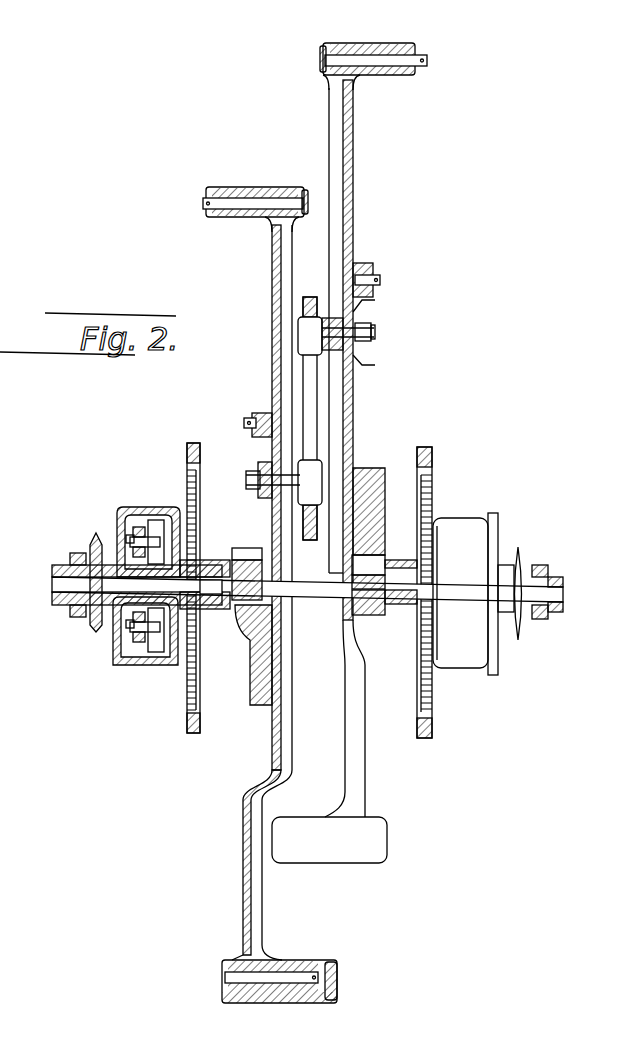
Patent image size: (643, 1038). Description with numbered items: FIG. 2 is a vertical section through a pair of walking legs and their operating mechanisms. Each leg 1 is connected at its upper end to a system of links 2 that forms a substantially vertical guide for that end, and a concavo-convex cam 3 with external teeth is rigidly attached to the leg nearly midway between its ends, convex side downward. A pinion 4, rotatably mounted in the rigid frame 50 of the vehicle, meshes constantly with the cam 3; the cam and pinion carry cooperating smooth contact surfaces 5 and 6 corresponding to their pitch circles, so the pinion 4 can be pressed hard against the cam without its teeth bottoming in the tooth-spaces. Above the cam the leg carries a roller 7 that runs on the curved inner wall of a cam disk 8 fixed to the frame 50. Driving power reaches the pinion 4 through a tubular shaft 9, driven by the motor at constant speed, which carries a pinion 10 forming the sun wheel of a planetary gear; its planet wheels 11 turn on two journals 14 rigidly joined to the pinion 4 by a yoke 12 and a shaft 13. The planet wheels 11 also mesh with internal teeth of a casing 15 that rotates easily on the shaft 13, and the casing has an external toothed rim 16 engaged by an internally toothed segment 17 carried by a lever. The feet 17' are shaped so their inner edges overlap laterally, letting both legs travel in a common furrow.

The leg 1 is at (352, 732).
The system of links 2 is at (410, 47).
The concavo-convex cam 3 is at (272, 726).
The pinion 4 is at (253, 551).
The smooth contact surface 5 is at (382, 482).
The smooth contact surface 6 is at (236, 563).
The roller 7 is at (300, 333).
The cam disk 8 is at (310, 379).
The tubular shaft 9 is at (95, 613).
The pinion 10 is at (137, 566).
The planet wheels 11 is at (140, 527).
The yoke 12 is at (196, 508).
The shaft 13 is at (206, 605).
The journals 14 is at (158, 522).
The casing 15 is at (454, 532).
The external toothed rim 16 is at (424, 560).
The internally toothed segment 17 is at (305, 583).
The foot 17' is at (329, 889).
The rigid frame 50 is at (76, 556).